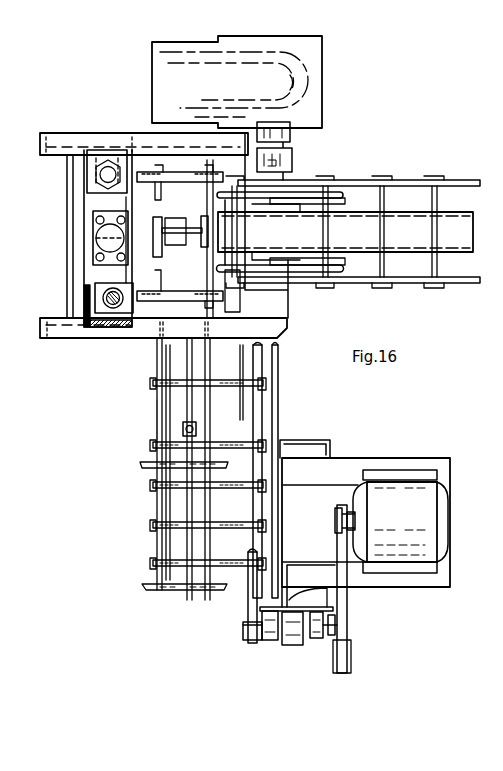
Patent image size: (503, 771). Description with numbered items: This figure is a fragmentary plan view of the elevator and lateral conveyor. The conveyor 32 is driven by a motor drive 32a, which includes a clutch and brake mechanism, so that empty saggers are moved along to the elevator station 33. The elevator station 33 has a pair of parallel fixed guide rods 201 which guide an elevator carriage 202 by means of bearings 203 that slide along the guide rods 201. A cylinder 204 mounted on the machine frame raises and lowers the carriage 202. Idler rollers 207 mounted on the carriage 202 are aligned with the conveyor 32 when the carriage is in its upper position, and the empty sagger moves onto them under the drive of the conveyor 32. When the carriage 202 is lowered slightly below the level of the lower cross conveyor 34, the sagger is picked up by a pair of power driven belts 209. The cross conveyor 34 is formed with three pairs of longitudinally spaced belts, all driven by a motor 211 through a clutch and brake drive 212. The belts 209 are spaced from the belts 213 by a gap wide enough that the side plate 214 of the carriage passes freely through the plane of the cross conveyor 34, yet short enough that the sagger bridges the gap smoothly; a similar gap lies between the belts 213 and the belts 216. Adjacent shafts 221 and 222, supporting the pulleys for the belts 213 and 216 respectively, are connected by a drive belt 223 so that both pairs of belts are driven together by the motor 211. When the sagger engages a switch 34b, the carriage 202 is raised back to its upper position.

The motor drive 32a is at (163, 50).
The elevator station 33 is at (146, 124).
The fixed guide rods 201 is at (108, 168).
The elevator carriage 202 is at (92, 274).
The bearings 203 is at (127, 314).
The cylinder 204 is at (103, 240).
The idler rollers 207 is at (170, 177).
The power driven belts 209 is at (175, 243).
The side plate 214 is at (215, 300).
The conveyor 32 is at (402, 178).
The cross conveyor 34 is at (138, 389).
The belts 213 is at (165, 424).
The switch 34b is at (182, 430).
The shaft 221 is at (258, 425).
The drive belt 223 is at (252, 452).
The shaft 222 is at (233, 489).
The belts 216 is at (195, 578).
The clutch and brake drive 212 is at (292, 646).
The motor 211 is at (425, 504).